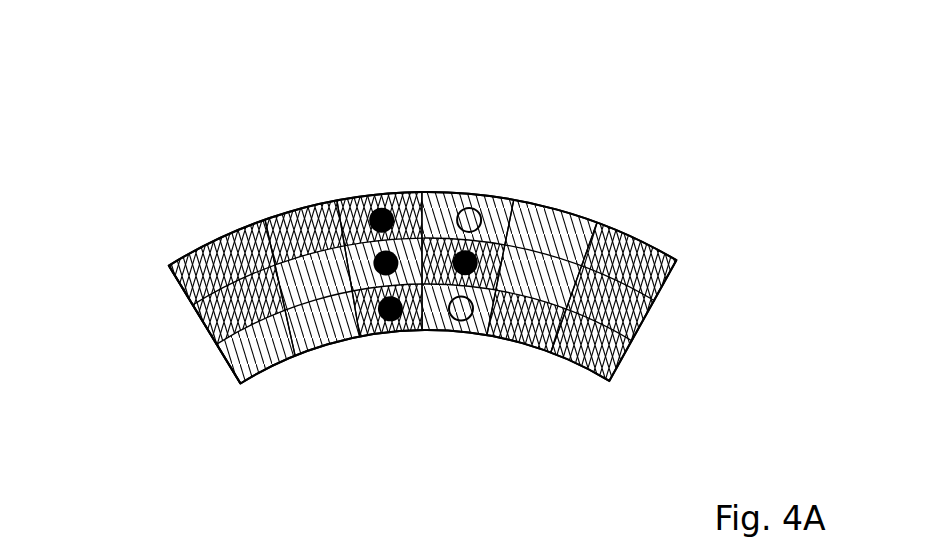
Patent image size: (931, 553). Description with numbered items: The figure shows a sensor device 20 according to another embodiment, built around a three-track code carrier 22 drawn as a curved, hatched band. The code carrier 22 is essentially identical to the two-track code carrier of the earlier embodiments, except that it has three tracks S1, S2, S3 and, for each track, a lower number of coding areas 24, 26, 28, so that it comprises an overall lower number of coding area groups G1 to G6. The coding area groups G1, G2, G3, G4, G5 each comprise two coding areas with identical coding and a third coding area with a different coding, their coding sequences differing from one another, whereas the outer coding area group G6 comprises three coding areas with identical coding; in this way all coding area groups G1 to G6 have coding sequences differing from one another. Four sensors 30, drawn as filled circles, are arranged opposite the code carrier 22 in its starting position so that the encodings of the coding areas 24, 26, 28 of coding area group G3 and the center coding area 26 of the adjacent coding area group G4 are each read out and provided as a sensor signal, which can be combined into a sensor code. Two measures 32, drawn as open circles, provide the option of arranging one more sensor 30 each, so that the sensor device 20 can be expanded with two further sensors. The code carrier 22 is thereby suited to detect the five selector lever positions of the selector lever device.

The sensor device 20 is at (605, 118).
The code carrier 22 is at (170, 258).
The coding area 24 is at (268, 230).
The coding area 26 is at (236, 318).
The coding area 28 is at (312, 337).
The sensor 30 is at (379, 208).
The measure 32 is at (470, 320).
The coding area group G1 is at (188, 235).
The coding area group G2 is at (282, 197).
The coding area group G3 is at (343, 194).
The coding area group G4 is at (445, 183).
The coding area group G5 is at (544, 198).
The coding area group G6 is at (631, 223).
The track S1 is at (170, 287).
The track S2 is at (190, 323).
The track S3 is at (222, 365).